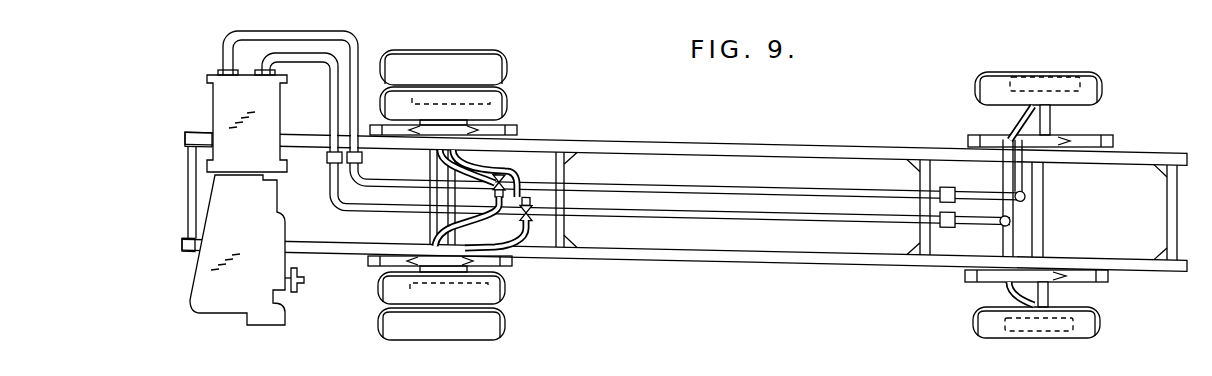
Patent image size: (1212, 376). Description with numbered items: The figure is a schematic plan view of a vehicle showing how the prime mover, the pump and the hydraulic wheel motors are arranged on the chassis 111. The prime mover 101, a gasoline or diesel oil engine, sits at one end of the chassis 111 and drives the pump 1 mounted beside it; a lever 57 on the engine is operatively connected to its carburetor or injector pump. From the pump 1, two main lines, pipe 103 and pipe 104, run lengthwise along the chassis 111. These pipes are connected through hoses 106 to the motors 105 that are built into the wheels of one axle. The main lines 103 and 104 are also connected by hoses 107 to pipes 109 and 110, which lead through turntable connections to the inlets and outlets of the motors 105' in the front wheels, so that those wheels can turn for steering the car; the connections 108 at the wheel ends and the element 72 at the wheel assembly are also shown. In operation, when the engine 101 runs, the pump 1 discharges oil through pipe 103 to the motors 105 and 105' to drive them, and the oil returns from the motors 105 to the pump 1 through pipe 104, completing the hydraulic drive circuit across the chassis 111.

The pump 1 is at (220, 110).
The prime mover 101 is at (198, 277).
The lever 57 is at (300, 292).
The motors 105 is at (468, 195).
The front tire 72 is at (508, 106).
The hoses 106 is at (518, 160).
The pipe 103 is at (660, 183).
The pipe 104 is at (763, 209).
The chassis 111 is at (701, 256).
The hoses 107 is at (966, 183).
The pipe 110 is at (1018, 197).
The pipe 109 is at (1008, 230).
The rear wheel air connections 108 is at (1047, 113).
The motors 105' is at (1059, 203).